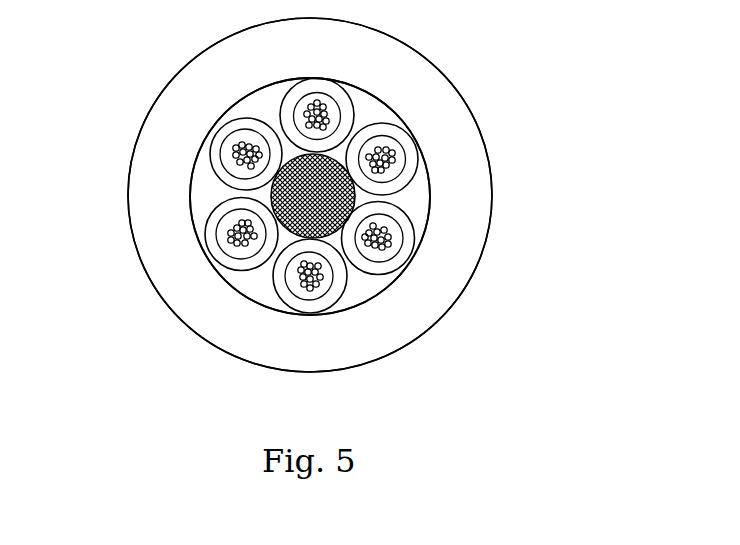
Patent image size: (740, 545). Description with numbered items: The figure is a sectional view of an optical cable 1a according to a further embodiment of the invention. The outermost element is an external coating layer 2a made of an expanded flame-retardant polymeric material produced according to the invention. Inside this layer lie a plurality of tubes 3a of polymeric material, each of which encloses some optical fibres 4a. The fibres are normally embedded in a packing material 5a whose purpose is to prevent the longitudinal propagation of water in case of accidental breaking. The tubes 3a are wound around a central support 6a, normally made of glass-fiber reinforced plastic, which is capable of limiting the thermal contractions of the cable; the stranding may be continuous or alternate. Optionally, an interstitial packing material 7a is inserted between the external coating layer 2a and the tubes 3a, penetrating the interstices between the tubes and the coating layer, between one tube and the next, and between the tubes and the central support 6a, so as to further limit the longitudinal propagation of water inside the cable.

The optical cable 1a is at (156, 97).
The external coating layer 2a is at (433, 107).
The tubes 3a is at (348, 104).
The optical fibres 4a is at (393, 240).
The packing material 5a is at (387, 222).
The central support 6a is at (357, 178).
The interstitial packing material 7a is at (355, 283).